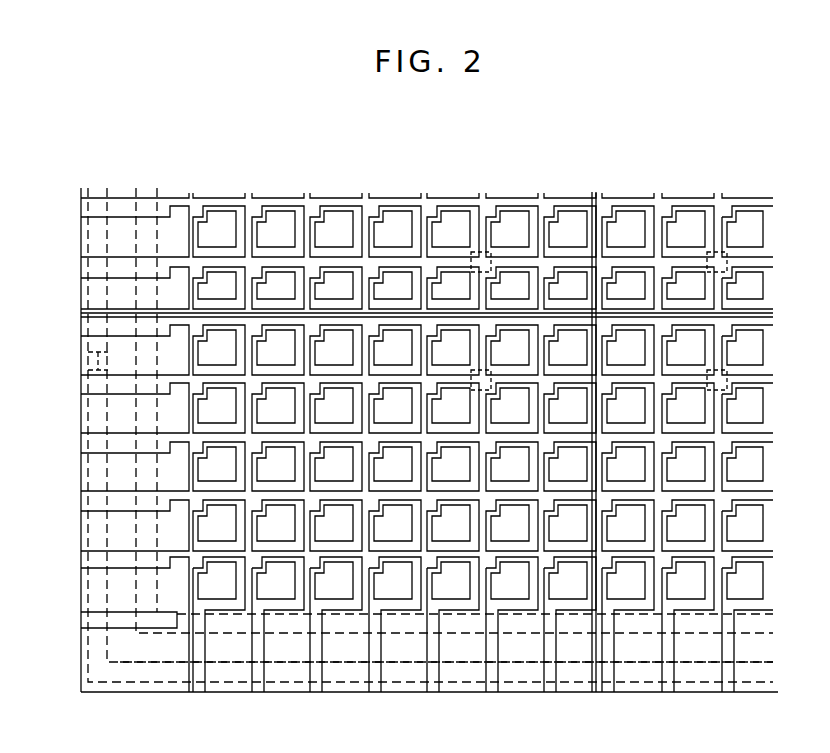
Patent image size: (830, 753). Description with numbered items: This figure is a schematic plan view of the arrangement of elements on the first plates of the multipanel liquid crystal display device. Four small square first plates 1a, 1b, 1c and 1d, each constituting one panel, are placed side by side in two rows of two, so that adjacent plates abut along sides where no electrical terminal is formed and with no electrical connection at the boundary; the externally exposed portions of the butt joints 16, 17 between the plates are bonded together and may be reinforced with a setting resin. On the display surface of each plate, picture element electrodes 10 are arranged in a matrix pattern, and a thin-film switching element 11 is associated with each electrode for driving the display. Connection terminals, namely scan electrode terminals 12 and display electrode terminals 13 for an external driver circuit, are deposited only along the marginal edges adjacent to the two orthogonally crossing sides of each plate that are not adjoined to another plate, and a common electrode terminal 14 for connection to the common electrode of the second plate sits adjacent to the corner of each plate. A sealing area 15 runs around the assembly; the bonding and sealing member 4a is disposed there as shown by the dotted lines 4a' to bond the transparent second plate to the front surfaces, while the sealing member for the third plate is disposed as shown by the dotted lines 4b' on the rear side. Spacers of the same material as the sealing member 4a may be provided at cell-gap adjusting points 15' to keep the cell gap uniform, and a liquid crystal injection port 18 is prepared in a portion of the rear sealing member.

The first plate 1a is at (86, 675).
The first plate 1b is at (80, 246).
The first plate 1c is at (767, 225).
The first plate 1d is at (767, 683).
The bonding and sealing member 4a is at (446, 694).
The dotted lines showing sealing member 4a 4a' is at (452, 388).
The dotted lines showing sealing member 4b 4b' is at (426, 412).
The picture element electrode 10 is at (513, 218).
The thin-film switching element 11 is at (373, 210).
The scan electrode terminal 12 is at (82, 447).
The display electrode terminal 13 is at (488, 683).
The common electrode terminal 14 is at (85, 618).
The sealing area 15 is at (526, 497).
The cell-gap adjusting point 15' is at (533, 270).
The butt joint 16 is at (80, 314).
The butt joint 17 is at (591, 692).
The liquid crystal injection port 18 is at (98, 360).